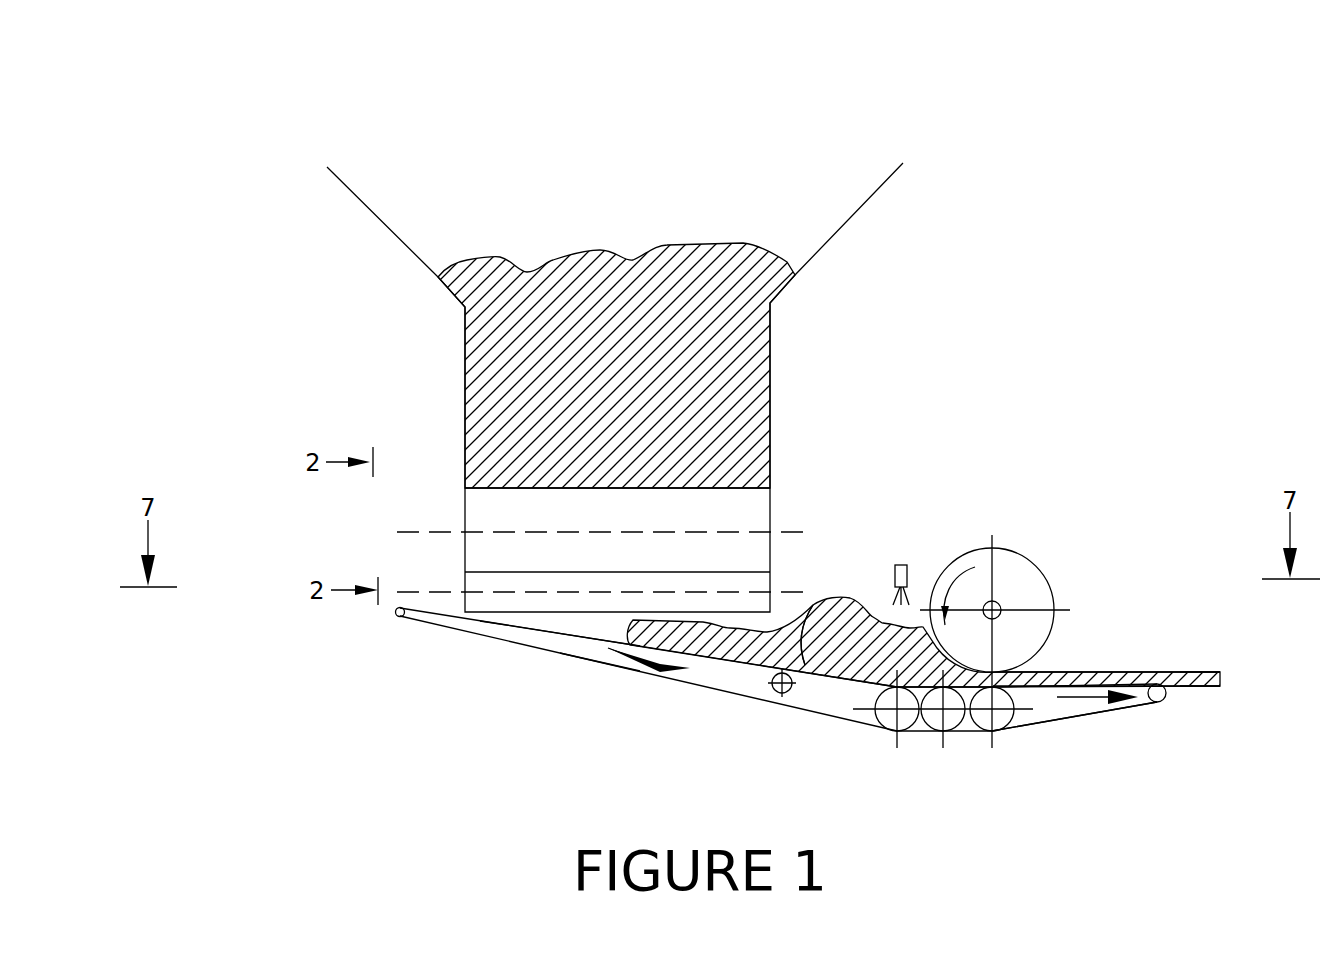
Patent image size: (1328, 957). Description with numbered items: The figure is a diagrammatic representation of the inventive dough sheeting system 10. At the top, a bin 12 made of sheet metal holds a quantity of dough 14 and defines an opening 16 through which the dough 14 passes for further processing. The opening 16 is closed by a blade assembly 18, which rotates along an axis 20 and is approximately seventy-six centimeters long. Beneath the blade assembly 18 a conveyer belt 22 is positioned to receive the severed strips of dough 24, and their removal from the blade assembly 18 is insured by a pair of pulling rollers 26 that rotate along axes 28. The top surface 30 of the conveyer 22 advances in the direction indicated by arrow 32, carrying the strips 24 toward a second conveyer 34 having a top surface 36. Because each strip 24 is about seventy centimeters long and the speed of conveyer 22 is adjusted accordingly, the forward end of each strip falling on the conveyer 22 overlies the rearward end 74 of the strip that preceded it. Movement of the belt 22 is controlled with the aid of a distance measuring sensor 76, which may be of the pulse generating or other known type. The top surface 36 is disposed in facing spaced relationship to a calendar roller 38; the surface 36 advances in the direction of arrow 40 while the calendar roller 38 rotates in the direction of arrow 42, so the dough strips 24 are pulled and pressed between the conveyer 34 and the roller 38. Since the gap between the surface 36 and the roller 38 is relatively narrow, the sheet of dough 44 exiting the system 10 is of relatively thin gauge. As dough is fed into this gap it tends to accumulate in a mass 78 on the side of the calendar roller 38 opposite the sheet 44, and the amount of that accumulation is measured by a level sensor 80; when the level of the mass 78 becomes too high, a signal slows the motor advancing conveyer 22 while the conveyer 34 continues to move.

The dough sheeting system 10 is at (630, 200).
The bin 12 is at (771, 330).
The dough 14 is at (762, 262).
The opening 16 is at (782, 500).
The blade assembly 18 is at (771, 556).
The axis 20 is at (397, 532).
The conveyer belt 22 is at (745, 700).
The strips of dough 24 is at (813, 606).
The pulling rollers 26 is at (497, 617).
The axes 28 is at (396, 611).
The top surface 30 is at (558, 632).
The arrow 32 is at (607, 663).
The second conveyer 34 is at (1050, 720).
The top surface 36 is at (1090, 673).
The calendar roller 38 is at (1028, 575).
The arrow 40 is at (1110, 702).
The arrow 42 is at (946, 576).
The sheet of dough 44 is at (1200, 673).
The rearward end 74 is at (805, 670).
The distance measuring sensor 76 is at (770, 684).
The mass 78 is at (942, 645).
The level sensor 80 is at (892, 564).